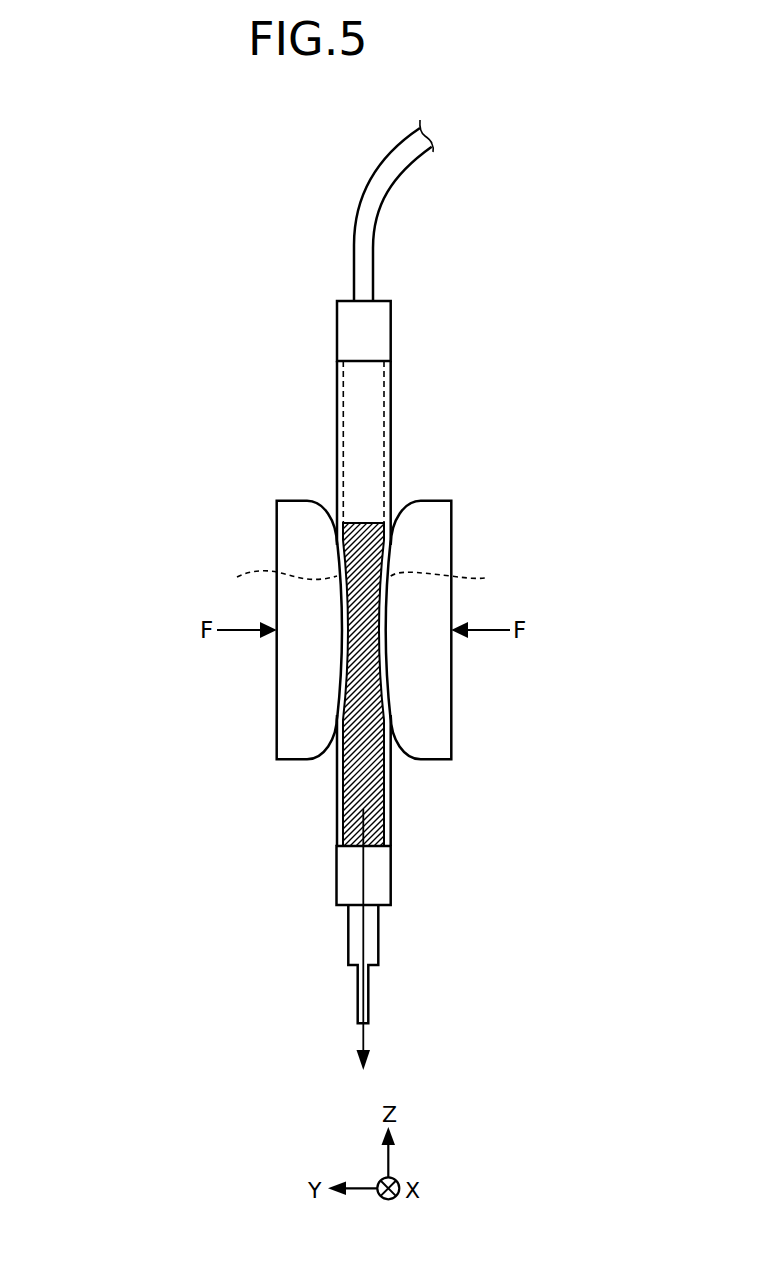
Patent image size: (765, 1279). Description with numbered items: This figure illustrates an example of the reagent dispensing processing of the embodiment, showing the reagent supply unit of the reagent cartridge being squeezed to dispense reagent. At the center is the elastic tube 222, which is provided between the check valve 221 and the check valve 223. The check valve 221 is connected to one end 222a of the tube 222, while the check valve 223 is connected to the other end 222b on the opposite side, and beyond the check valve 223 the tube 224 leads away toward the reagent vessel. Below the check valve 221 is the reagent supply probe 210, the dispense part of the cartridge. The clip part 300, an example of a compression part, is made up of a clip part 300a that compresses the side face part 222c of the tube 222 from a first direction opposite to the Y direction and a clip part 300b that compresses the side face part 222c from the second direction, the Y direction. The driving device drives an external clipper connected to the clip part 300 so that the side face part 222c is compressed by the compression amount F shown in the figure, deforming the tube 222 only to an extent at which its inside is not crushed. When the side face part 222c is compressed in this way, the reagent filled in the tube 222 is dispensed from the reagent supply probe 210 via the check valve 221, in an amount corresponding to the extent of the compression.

The reagent supply probe 210 is at (358, 1010).
The check valve 221 is at (352, 877).
The tube 222 is at (337, 387).
The one end of the tube 222a is at (392, 825).
The another end of the tube 222b is at (392, 383).
The side face part 222c is at (365, 577).
The check valve 223 is at (352, 332).
The tube 224 is at (354, 266).
The clip part 300 is at (304, 630).
The clip part 300a is at (277, 744).
The clip part 300b is at (452, 744).